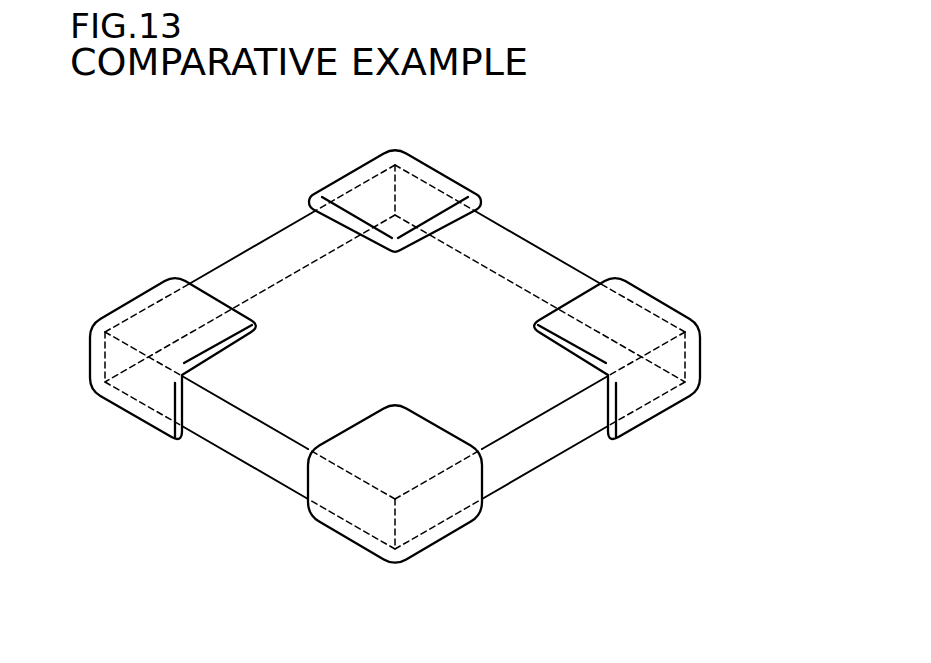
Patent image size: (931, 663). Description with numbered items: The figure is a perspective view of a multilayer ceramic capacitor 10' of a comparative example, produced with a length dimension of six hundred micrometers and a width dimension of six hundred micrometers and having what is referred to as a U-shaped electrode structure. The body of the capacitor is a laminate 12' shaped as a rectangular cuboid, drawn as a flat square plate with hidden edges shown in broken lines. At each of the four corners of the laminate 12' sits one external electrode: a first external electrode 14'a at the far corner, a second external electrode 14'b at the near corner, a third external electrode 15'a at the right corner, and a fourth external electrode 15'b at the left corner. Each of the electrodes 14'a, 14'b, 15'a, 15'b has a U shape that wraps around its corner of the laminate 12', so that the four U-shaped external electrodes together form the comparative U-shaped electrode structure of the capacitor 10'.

The multilayer ceramic capacitor 10' is at (391, 355).
The laminate 12' is at (395, 357).
The first external electrode 14'a is at (390, 170).
The second external electrode 14'b is at (405, 513).
The third external electrode 15'a is at (624, 329).
The fourth external electrode 15'b is at (162, 330).